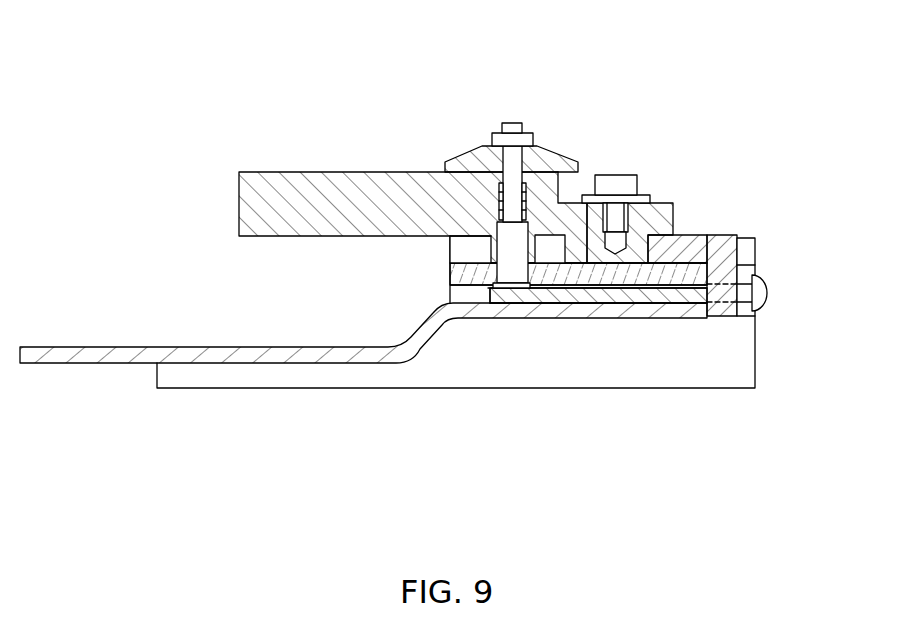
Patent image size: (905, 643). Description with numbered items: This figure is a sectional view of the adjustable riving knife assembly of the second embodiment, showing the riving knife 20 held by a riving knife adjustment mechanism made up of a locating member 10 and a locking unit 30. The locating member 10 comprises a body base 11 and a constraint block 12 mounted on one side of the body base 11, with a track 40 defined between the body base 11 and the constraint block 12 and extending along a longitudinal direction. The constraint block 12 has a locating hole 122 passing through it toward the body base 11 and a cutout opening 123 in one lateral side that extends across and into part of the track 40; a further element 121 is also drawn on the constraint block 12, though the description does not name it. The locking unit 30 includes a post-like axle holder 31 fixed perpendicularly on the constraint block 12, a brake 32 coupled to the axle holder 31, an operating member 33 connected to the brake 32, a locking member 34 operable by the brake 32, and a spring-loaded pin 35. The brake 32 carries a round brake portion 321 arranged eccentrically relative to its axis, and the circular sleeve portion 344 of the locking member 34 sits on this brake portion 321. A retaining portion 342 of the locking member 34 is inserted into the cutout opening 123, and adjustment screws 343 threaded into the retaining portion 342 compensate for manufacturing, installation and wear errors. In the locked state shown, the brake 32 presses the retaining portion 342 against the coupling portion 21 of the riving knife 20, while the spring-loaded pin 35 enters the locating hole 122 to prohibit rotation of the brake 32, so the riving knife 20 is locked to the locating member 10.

The locating member 10 is at (108, 350).
The body base 11 is at (425, 333).
The constraint block 12 is at (697, 272).
The screw 121 is at (640, 198).
The locating hole 122 is at (470, 272).
The cutout opening 123 is at (845, 254).
The riving knife 20 is at (609, 315).
The coupling portion 21 is at (648, 290).
The locking unit 30 is at (572, 138).
The axle holder 31 is at (662, 213).
The brake 32 is at (690, 225).
The brake portion 321 is at (578, 257).
The operating member 33 is at (260, 192).
The locking member 34 is at (553, 250).
The circular sleeve portion 344 is at (658, 248).
The retaining portion 342 is at (725, 278).
The adjustment screws 343 is at (850, 286).
The spring-loaded pin 35 is at (508, 238).
The track 40 is at (690, 285).